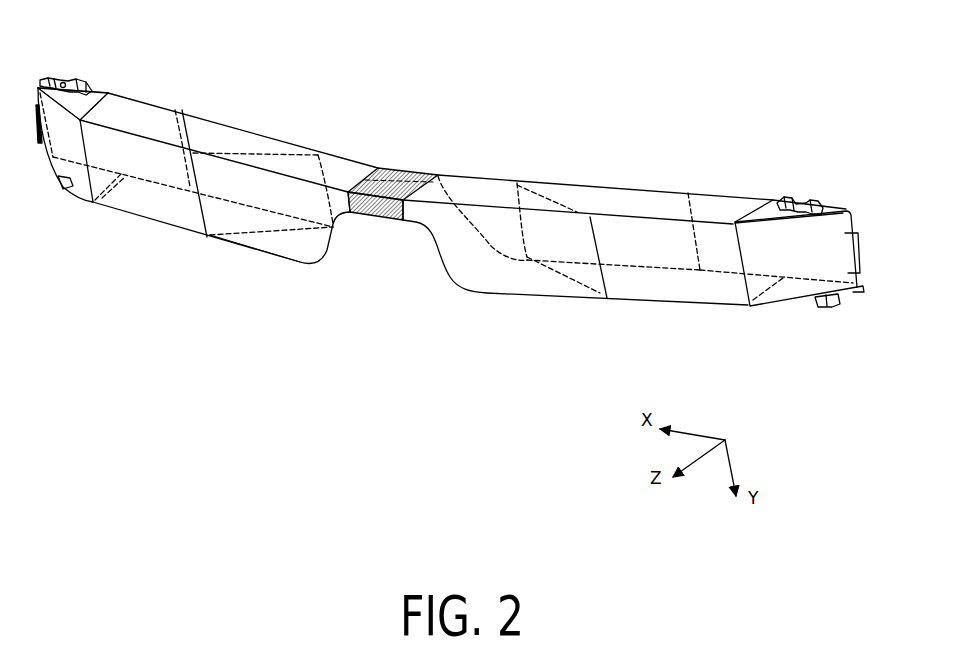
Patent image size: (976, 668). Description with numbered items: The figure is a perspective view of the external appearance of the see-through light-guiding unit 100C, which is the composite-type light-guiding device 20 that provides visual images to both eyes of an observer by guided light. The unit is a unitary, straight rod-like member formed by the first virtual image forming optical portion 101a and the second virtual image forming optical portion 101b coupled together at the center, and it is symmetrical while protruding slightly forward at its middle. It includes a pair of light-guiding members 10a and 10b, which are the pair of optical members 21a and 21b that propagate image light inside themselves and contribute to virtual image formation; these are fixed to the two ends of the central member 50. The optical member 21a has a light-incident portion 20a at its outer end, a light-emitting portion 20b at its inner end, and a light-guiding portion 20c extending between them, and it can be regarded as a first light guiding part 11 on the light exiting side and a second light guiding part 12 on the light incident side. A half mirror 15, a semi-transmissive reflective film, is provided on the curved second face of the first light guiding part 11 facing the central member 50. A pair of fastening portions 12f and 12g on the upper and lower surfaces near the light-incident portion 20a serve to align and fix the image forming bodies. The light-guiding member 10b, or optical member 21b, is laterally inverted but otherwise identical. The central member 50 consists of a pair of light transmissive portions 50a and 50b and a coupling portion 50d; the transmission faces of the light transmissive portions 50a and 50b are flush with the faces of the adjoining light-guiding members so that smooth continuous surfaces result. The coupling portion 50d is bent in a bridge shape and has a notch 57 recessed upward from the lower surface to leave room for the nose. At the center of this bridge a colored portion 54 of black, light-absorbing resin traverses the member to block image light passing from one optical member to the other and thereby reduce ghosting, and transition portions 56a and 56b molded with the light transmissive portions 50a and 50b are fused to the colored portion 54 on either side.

The see-through light-guiding unit 100C is at (838, 44).
The light-guiding device 20 is at (440, 202).
The light-guiding member 10a is at (137, 190).
The optical member 21a is at (208, 192).
The light-guiding member 10b is at (627, 280).
The optical member 21b is at (624, 278).
The first light guiding part 11 is at (220, 137).
The second light guiding part 12 is at (62, 143).
The fastening portion 12f is at (55, 77).
The fastening portion 12g is at (67, 183).
The half mirror 15 is at (292, 167).
The light-incident portion 20a is at (87, 103).
The light-emitting portion 20b is at (253, 148).
The light-guiding portion 20c is at (163, 133).
The central member 50 is at (430, 145).
The light transmissive portion 50a is at (282, 243).
The light transmissive portion 50b is at (522, 277).
The coupling portion 50d is at (392, 168).
The colored portion 54 is at (393, 220).
The transition portion 56a is at (342, 178).
The transition portion 56b is at (440, 223).
The notch 57 is at (352, 223).
The first virtual image forming optical portion 101a is at (187, 213).
The second virtual image forming optical portion 101b is at (590, 277).